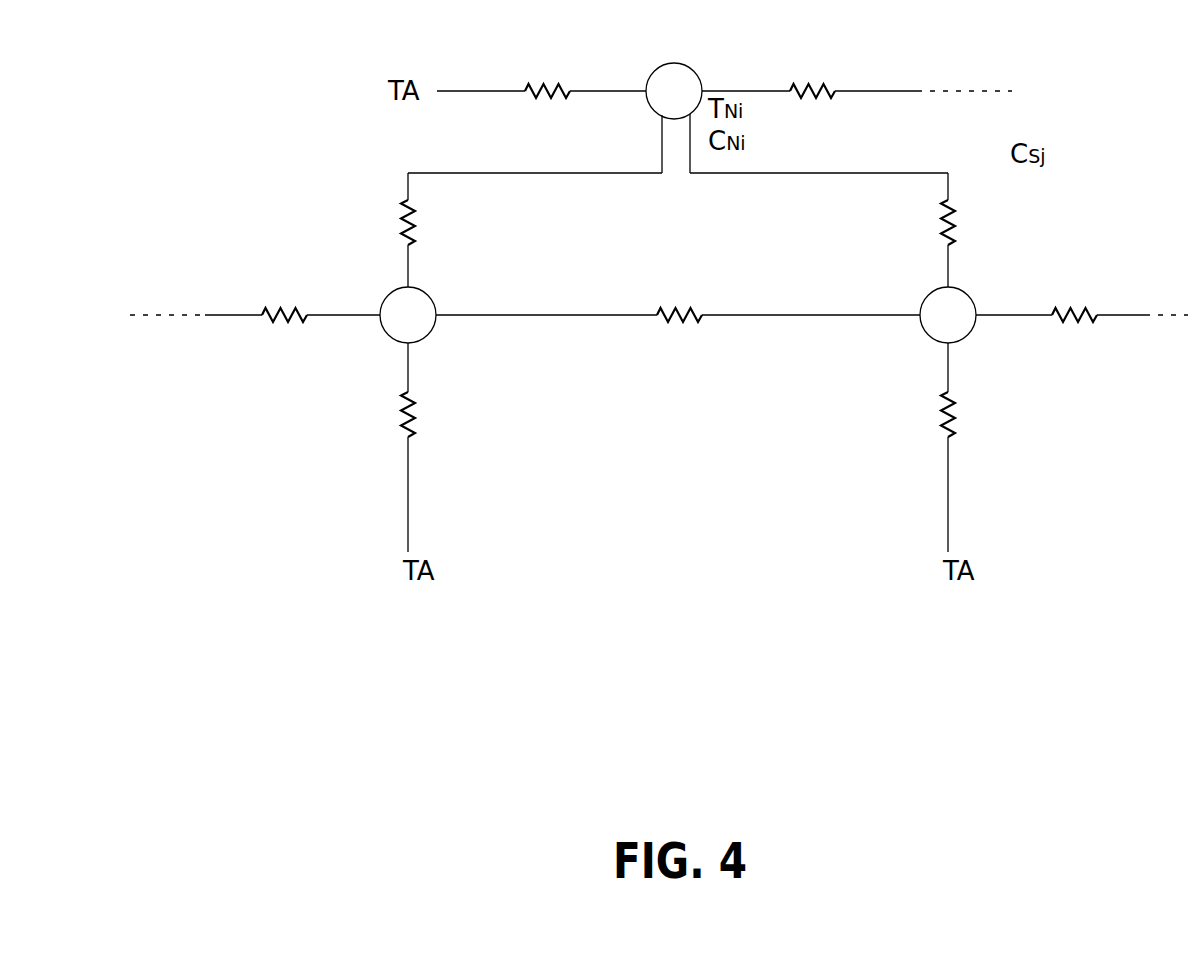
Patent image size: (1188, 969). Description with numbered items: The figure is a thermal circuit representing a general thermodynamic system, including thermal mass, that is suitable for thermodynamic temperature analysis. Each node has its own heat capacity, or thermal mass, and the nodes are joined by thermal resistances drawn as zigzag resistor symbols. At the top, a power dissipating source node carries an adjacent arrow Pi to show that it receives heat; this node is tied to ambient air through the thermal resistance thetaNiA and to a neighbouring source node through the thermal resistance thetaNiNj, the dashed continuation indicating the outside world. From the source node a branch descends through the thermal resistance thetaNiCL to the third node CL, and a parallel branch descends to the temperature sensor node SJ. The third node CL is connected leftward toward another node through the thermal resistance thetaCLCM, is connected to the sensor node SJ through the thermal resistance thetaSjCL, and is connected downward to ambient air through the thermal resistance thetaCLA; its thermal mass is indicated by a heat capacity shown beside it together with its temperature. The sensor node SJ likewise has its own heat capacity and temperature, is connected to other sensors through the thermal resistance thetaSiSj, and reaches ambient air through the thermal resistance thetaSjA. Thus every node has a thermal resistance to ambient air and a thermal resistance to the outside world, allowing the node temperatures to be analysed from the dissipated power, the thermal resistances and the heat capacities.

The power input arrow Pi is at (708, 62).
The thermal resistance from node Ni to ambient thetaNiA is at (541, 77).
The thermal resistance between nodes Ni and Nj thetaNiNj is at (857, 76).
The thermal resistance between node Ni and node CL thetaNiCL is at (366, 230).
The thermal resistance between node CL and node CM thetaCLCM is at (292, 299).
The thermal resistance between sensor node Sj and node CL thetaSjCL is at (678, 299).
The thermal resistance between sensors Si and Sj thetaSiSj is at (1082, 299).
The thermal resistance from node CL to ambient thetaCLA is at (367, 447).
The thermal resistance from sensor node Sj to ambient thetaSjA is at (979, 447).
The third node CL is at (429, 336).
The temperature sensor node SJ is at (966, 321).